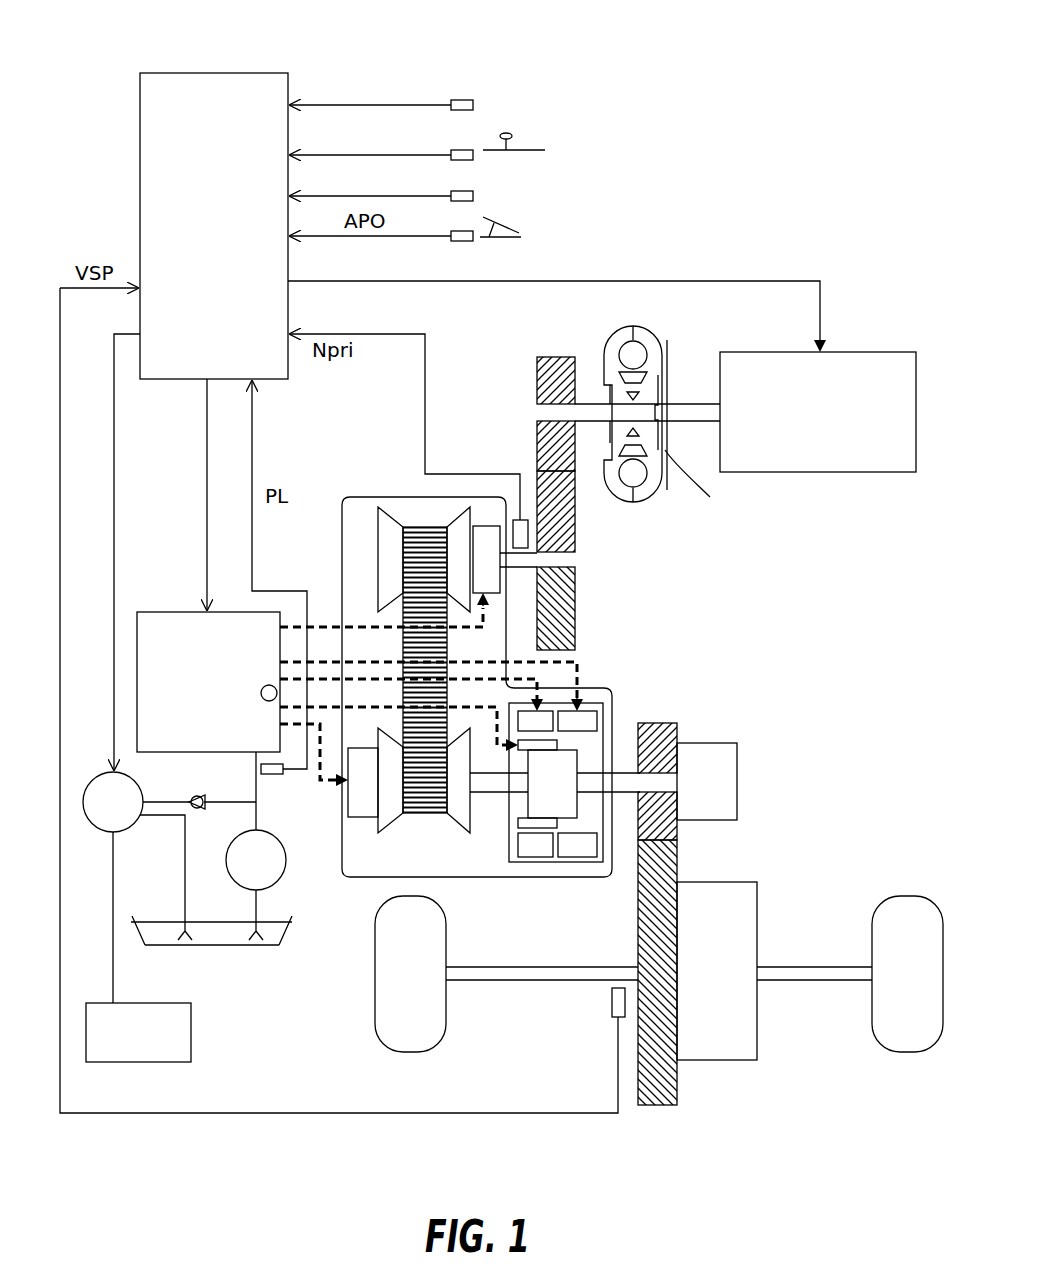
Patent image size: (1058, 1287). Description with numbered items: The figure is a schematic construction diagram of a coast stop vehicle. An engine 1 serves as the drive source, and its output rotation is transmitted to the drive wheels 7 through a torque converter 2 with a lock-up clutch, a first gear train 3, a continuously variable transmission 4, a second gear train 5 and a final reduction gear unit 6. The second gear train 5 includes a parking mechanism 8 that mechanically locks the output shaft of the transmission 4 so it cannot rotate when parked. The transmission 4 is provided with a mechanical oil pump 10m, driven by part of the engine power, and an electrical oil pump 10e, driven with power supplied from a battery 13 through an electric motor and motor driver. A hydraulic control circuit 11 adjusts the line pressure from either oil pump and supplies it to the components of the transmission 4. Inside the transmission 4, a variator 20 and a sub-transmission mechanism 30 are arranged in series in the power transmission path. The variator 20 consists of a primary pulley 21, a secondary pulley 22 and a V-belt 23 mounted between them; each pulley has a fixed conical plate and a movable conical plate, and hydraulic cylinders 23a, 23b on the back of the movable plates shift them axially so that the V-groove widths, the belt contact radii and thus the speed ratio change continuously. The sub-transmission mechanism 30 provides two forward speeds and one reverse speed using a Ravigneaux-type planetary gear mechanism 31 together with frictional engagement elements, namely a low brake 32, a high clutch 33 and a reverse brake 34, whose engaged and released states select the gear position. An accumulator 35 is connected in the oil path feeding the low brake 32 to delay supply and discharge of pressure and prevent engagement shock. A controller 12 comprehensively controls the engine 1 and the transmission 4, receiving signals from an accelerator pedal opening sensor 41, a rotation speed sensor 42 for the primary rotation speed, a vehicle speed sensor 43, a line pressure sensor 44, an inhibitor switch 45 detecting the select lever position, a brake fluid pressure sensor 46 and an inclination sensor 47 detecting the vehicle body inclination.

The engine 1 is at (900, 362).
The torque converter 2 is at (665, 352).
The first gear train 3 is at (560, 340).
The transmission 4 is at (392, 497).
The second gear train 5 is at (656, 1119).
The final reduction gear unit 6 is at (715, 1050).
The drive wheels 7 is at (410, 1038).
The parking mechanism 8 is at (720, 770).
The electrical oil pump 10e is at (128, 822).
The mechanical oil pump 10m is at (278, 878).
The hydraulic control circuit 11 is at (155, 612).
The controller 12 is at (276, 85).
The battery 13 is at (182, 1045).
The variator 20 is at (362, 528).
The primary pulley 21 is at (393, 560).
The secondary pulley 22 is at (392, 800).
The V-belt 23 is at (430, 525).
The hydraulic cylinder 23a is at (485, 540).
The hydraulic cylinder 23b is at (357, 805).
The sub-transmission mechanism 30 is at (612, 708).
The Ravigneaux-type planetary gear mechanism 31 is at (555, 778).
The low brake 32 is at (540, 722).
The high clutch 33 is at (535, 822).
The reverse brake 34 is at (575, 722).
The accumulator 35 is at (267, 701).
The accelerator pedal opening sensor 41 is at (460, 242).
The rotation speed sensor 42 is at (520, 535).
The vehicle speed sensor 43 is at (612, 1002).
The line pressure sensor 44 is at (275, 776).
The inhibitor switch 45 is at (464, 151).
The brake fluid pressure sensor 46 is at (458, 202).
The inclination sensor 47 is at (462, 101).